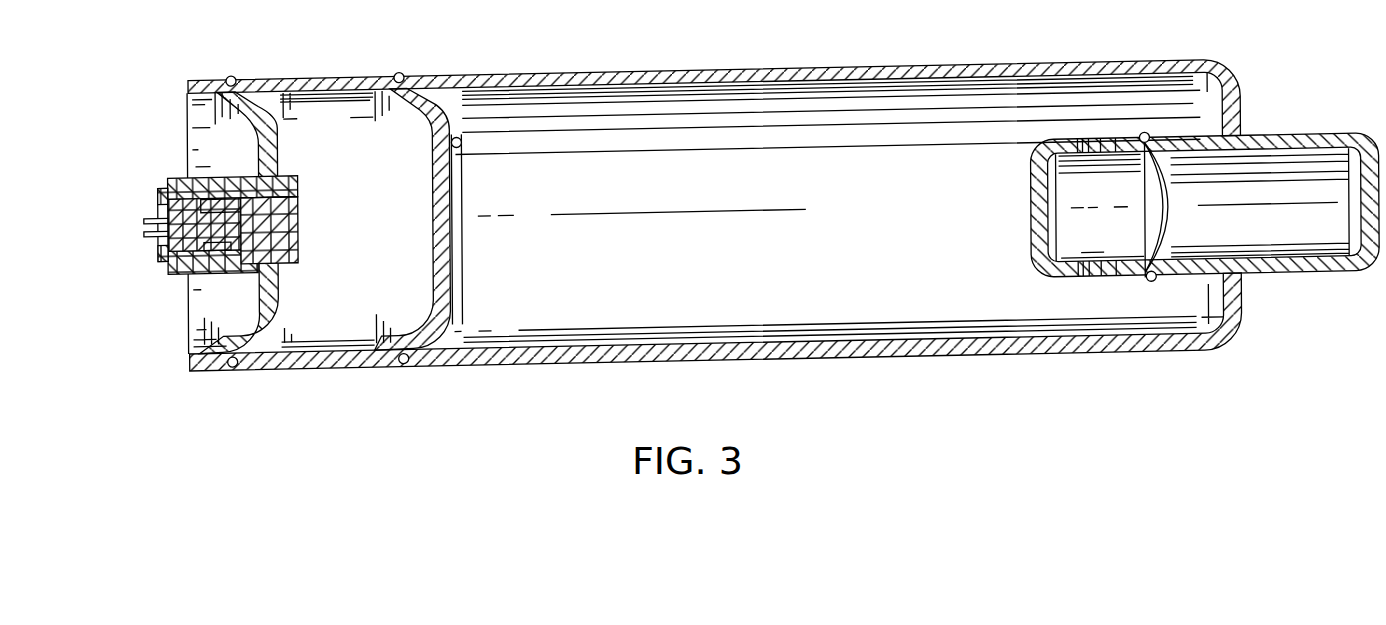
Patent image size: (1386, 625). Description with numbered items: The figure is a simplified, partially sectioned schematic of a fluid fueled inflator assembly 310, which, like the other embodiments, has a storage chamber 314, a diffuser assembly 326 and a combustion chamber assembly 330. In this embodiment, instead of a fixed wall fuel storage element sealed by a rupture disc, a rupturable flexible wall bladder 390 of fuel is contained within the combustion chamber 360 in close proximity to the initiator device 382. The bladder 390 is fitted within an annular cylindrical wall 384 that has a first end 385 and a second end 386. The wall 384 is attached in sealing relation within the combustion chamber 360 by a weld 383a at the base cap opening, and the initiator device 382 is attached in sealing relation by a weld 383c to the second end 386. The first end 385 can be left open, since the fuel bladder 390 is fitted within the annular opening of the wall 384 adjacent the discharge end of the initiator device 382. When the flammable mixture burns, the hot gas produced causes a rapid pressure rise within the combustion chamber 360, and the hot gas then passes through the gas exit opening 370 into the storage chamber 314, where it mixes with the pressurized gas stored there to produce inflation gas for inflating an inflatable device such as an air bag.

The fluid fueled inflator assembly 310 is at (713, 209).
The storage chamber 314 is at (578, 128).
The diffuser assembly 326 is at (1352, 128).
The combustion chamber assembly 330 is at (313, 72).
The combustion chamber 360 is at (337, 310).
The gas exit opening 370 is at (436, 208).
The initiator device 382 is at (180, 221).
The weld 383a is at (253, 170).
The weld 383c is at (160, 266).
The annular cylindrical wall 384 is at (180, 180).
The first end 385 is at (298, 177).
The second end 386 is at (170, 273).
The rupturable flexible wall bladder 390 is at (297, 226).